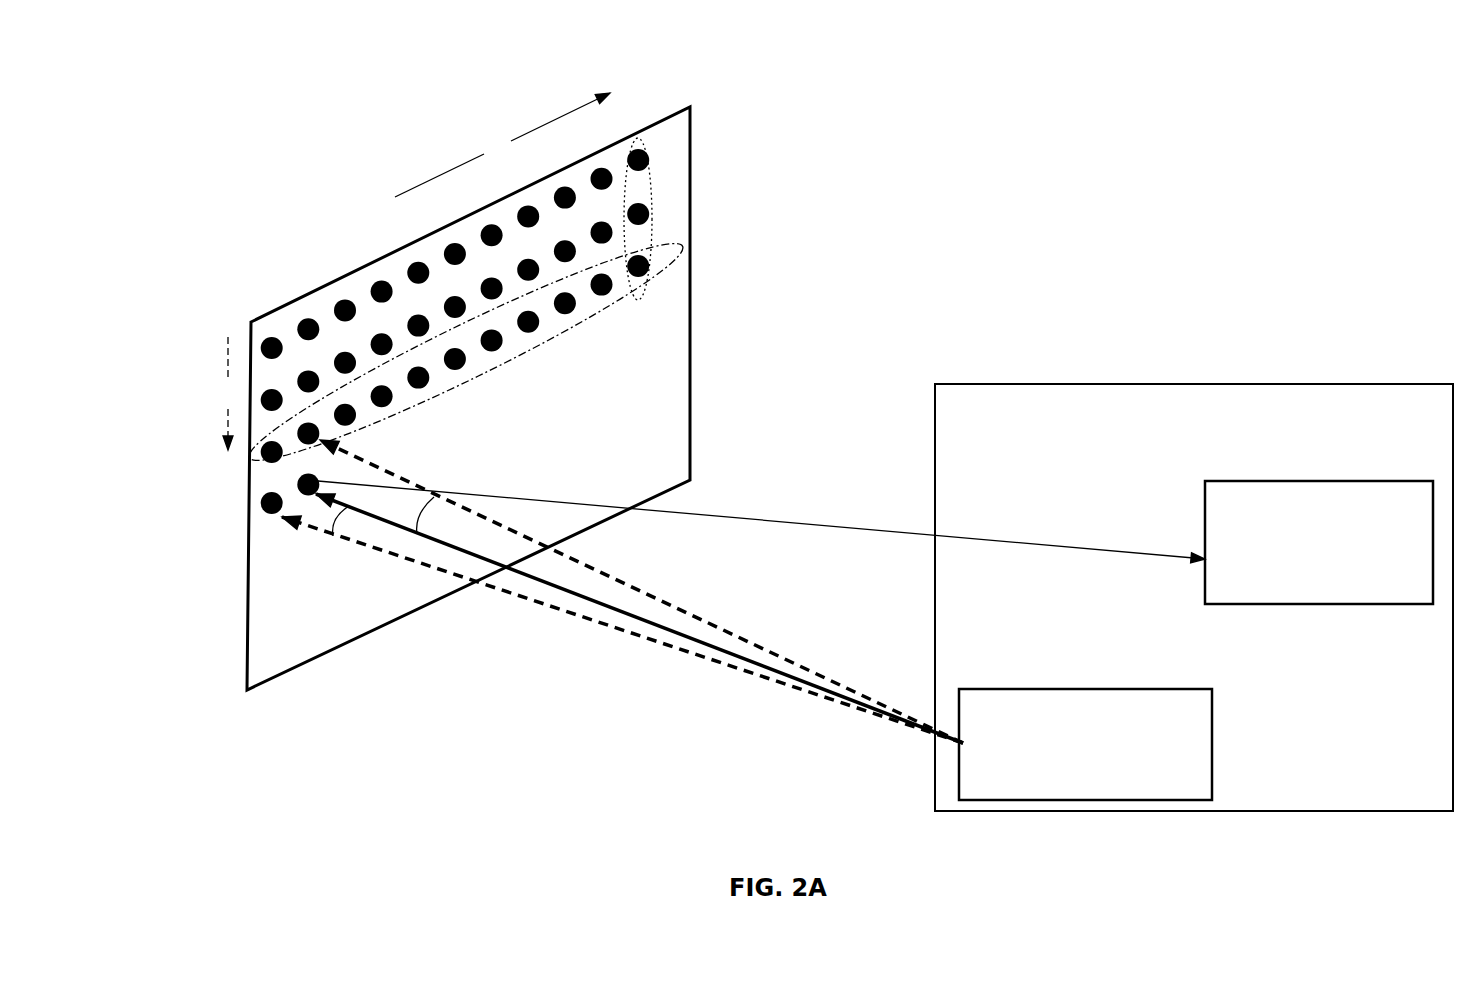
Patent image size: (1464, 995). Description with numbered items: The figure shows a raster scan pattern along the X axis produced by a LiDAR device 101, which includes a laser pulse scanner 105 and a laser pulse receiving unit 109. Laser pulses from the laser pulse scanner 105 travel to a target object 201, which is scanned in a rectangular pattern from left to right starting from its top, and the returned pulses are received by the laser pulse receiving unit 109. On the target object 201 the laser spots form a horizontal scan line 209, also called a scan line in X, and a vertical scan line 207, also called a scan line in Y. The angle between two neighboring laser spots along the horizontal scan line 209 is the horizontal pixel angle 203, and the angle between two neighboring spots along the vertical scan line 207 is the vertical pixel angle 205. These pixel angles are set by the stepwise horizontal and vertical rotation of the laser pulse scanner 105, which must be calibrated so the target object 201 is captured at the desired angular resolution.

The LiDAR device 101 is at (1194, 597).
The laser pulse scanner 105 is at (1085, 744).
The laser pulse receiving unit 109 is at (1319, 542).
The target object 201 is at (690, 145).
The horizontal pixel angle 203 is at (330, 533).
The vertical pixel angle 205 is at (417, 534).
The vertical scan line 207 is at (642, 297).
The horizontal scan line 209 is at (480, 375).